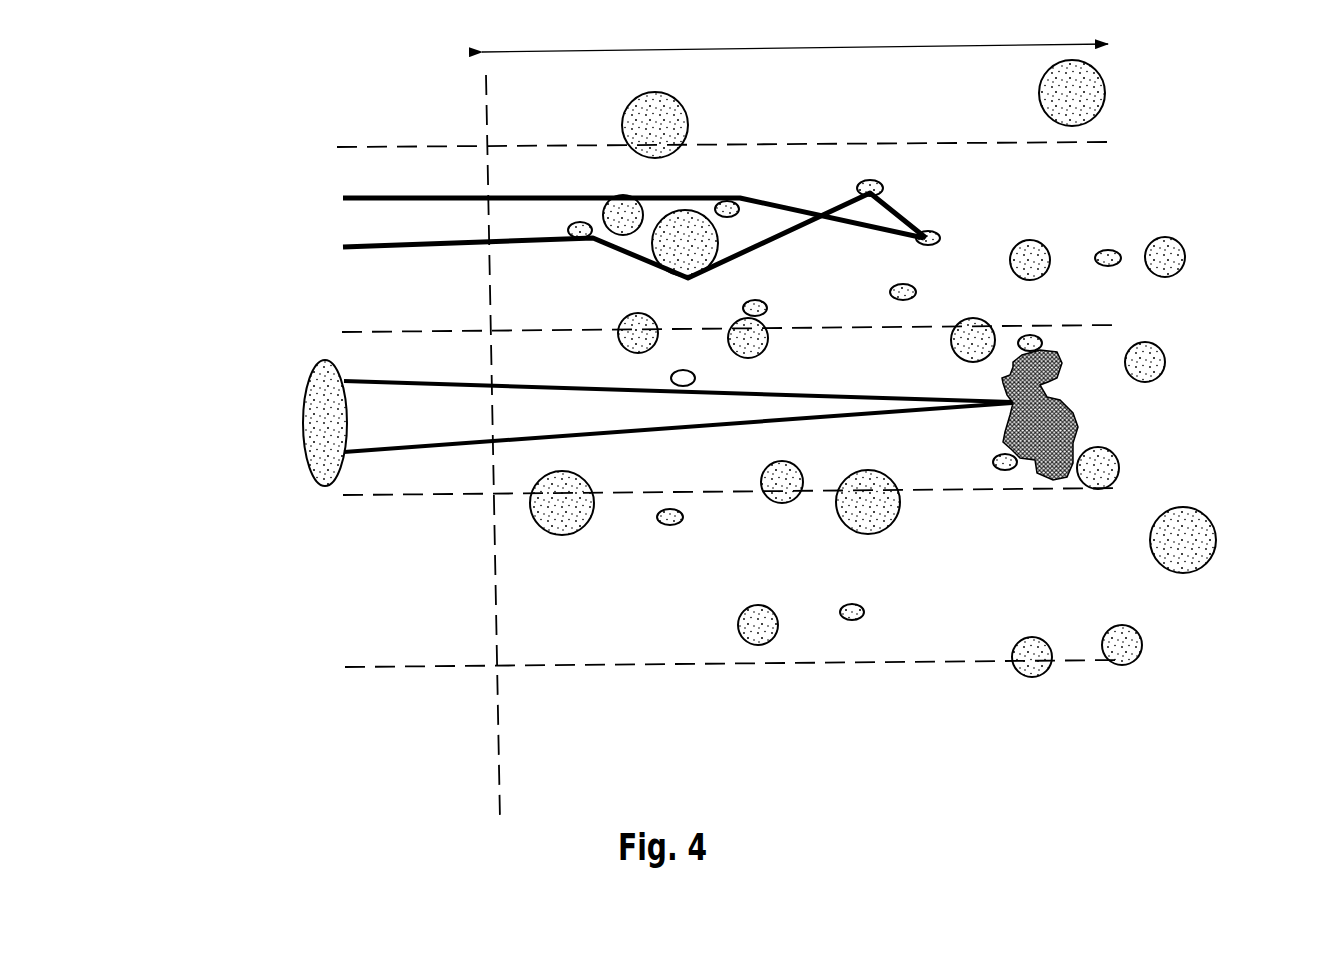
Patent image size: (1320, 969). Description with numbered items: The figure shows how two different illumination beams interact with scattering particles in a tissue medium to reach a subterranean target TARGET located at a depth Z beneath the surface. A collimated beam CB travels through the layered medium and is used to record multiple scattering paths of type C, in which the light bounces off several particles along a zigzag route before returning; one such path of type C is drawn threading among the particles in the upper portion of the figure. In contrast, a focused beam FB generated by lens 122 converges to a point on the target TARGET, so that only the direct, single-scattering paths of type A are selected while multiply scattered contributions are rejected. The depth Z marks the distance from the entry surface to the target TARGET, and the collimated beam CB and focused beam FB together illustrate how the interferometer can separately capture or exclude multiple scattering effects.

The lens 122 is at (269, 444).
The focused beam FB is at (405, 447).
The collimated beam CB is at (404, 610).
The target TARGET is at (1148, 415).
The multiple scattering path of type C is at (539, 208).
The depth Z is at (795, 35).